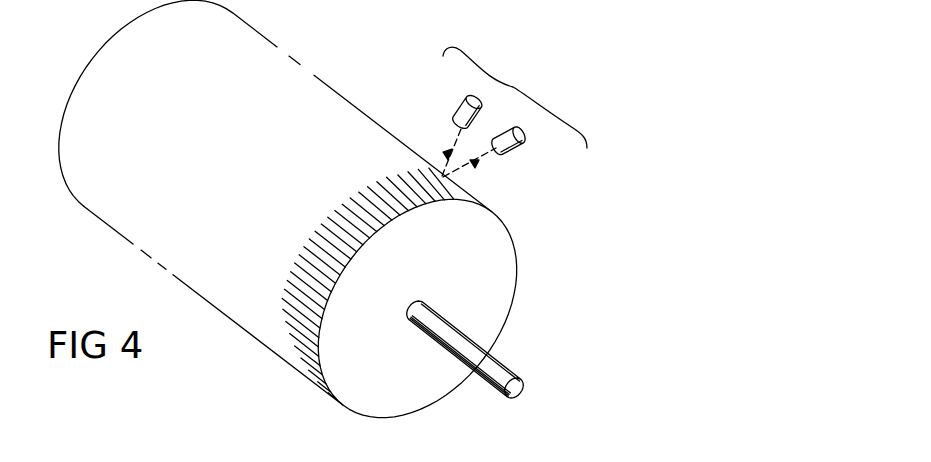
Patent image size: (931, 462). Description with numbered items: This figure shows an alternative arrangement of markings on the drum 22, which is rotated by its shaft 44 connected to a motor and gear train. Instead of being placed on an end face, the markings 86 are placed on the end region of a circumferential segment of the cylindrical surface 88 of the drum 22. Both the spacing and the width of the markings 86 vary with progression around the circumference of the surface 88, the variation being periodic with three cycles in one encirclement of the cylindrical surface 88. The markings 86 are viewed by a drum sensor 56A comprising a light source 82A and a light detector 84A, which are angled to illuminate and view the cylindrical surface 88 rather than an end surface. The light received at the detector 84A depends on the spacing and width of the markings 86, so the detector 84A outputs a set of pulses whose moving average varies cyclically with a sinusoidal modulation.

The drum 22 is at (370, 121).
The shaft 44 is at (476, 349).
The drum sensor 56A is at (515, 97).
The light source 82A is at (461, 104).
The light detector 84A is at (520, 148).
The markings 86 is at (313, 228).
The cylindrical surface 88 is at (248, 306).